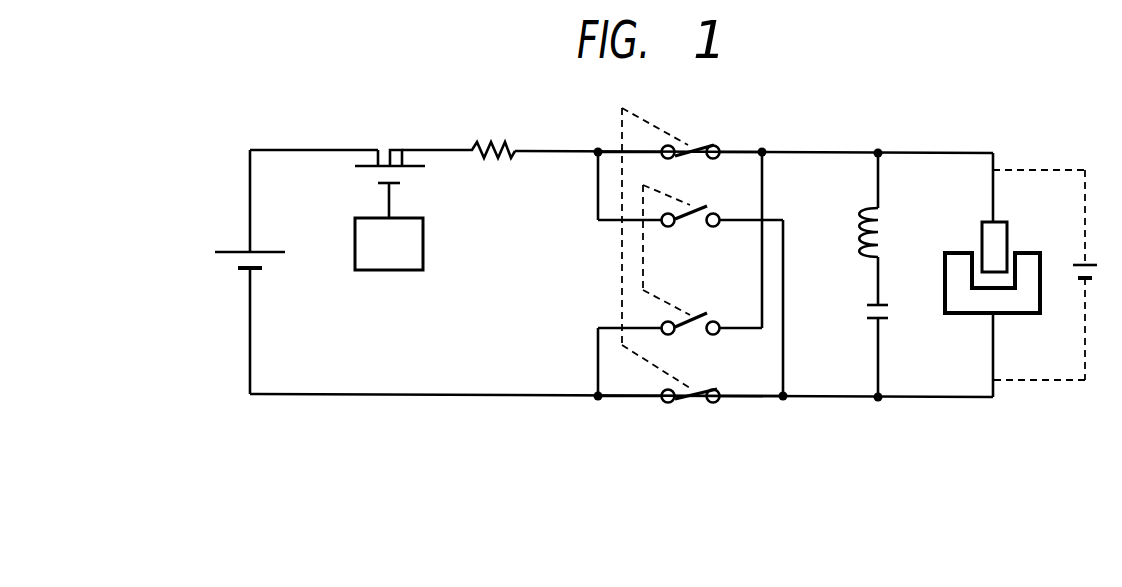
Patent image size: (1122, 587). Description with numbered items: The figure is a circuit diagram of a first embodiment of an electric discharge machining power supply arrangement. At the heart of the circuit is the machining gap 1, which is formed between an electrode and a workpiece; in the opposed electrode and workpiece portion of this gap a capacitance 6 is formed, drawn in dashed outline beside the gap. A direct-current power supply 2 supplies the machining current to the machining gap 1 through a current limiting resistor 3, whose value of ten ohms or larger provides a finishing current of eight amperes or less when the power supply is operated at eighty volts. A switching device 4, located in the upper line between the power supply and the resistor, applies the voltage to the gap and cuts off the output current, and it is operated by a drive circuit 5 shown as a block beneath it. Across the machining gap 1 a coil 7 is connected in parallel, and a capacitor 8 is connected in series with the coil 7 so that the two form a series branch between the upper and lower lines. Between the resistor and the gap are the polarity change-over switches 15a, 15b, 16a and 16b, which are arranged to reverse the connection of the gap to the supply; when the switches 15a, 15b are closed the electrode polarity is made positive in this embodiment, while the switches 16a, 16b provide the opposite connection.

The machining gap 1 is at (1006, 236).
The direct-current power supply 2 is at (222, 260).
The current limiting resistor 3 is at (497, 137).
The switching device 4 is at (394, 141).
The drive circuit 5 is at (424, 238).
The capacitance 6 is at (1092, 264).
The coil 7 is at (893, 230).
The capacitor 8 is at (890, 322).
The polarity change-over switch 15a is at (698, 145).
The polarity change-over switch 15b is at (698, 389).
The polarity change-over switch 16a is at (698, 214).
The polarity change-over switch 16b is at (698, 306).